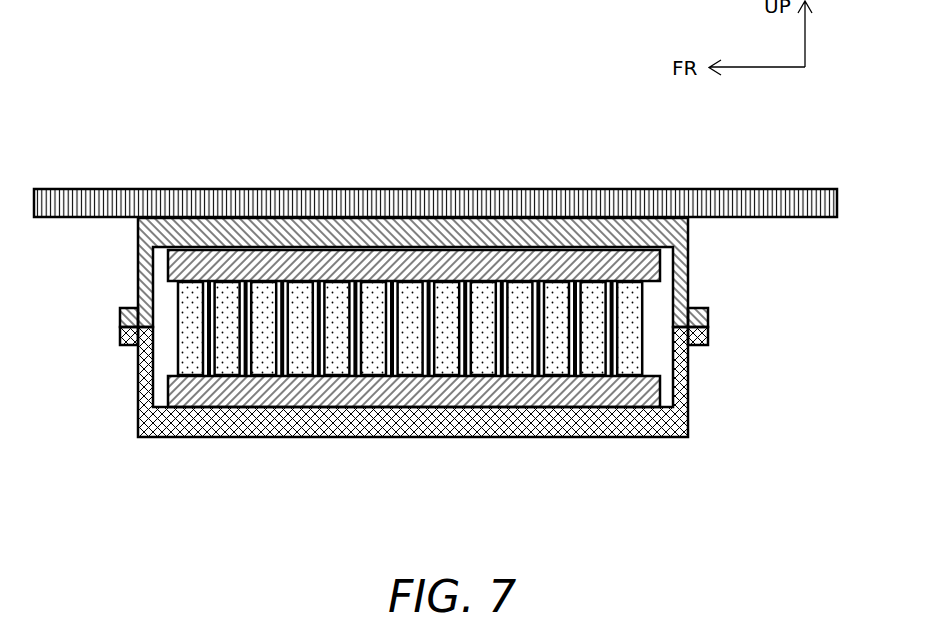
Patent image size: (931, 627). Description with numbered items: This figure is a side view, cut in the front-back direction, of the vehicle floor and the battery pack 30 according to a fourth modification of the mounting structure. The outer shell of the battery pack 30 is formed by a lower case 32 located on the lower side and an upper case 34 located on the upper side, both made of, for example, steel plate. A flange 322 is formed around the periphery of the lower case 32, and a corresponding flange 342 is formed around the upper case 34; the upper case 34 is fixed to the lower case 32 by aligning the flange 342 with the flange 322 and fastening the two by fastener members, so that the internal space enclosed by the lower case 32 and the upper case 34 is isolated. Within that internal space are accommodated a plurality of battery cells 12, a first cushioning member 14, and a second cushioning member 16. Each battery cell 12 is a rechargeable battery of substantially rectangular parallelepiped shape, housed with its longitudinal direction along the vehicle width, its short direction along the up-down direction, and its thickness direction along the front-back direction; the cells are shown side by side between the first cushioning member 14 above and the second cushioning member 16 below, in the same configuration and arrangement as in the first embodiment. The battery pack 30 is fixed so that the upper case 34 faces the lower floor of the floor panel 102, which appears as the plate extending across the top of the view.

The battery cell 12 is at (190, 295).
The first cushioning member 14 is at (601, 262).
The second cushioning member 16 is at (378, 395).
The battery pack 30 is at (406, 307).
The lower case 32 is at (467, 425).
The flange 322 is at (128, 347).
The upper case 34 is at (300, 230).
The flange 342 is at (128, 308).
The floor panel 102 is at (486, 212).